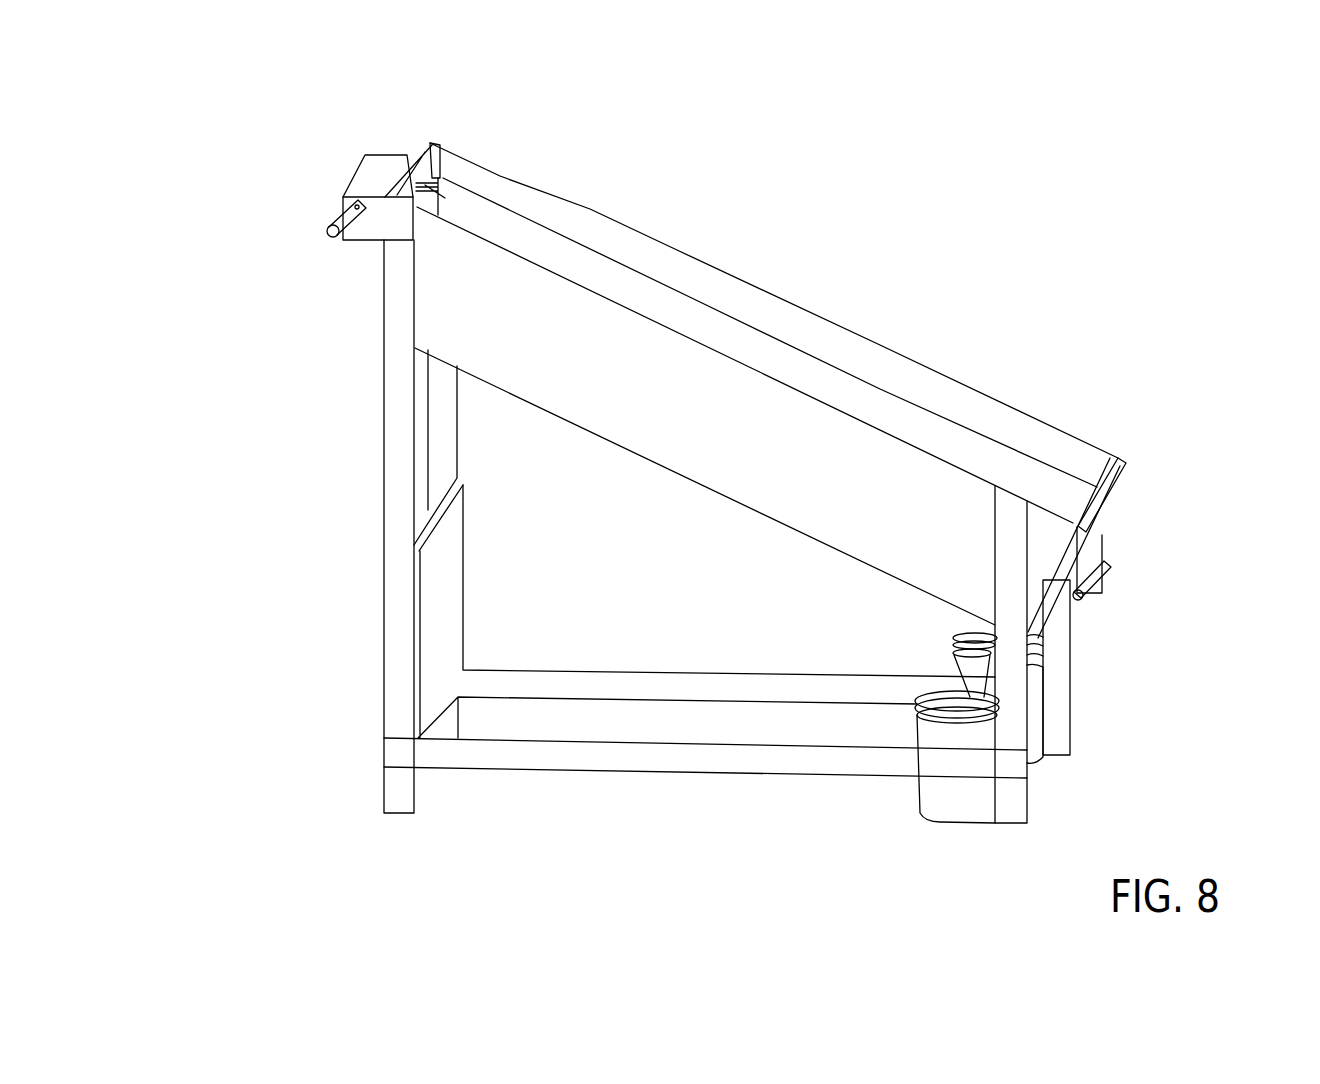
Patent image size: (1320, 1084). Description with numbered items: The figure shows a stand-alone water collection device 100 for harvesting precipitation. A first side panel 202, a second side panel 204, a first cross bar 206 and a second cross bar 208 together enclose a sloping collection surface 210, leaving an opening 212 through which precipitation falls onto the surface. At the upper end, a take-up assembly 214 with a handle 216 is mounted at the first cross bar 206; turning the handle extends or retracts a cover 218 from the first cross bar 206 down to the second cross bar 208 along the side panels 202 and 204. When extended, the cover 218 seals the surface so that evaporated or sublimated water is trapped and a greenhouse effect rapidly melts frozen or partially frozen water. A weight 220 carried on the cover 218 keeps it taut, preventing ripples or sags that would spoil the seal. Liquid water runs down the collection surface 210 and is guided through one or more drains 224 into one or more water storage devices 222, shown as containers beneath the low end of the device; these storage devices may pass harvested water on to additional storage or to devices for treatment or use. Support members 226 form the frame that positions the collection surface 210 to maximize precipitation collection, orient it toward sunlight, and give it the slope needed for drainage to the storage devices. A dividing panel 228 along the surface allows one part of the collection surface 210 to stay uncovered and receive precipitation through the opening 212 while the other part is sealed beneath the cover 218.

The water collection device 100 is at (197, 369).
The first side panel 202 is at (898, 356).
The second side panel 204 is at (496, 313).
The first cross bar 206 is at (413, 153).
The second cross bar 208 is at (1060, 578).
The collection surface 210 is at (619, 446).
The opening 212 is at (600, 231).
The take-up assembly 214 is at (350, 178).
The handle 216 is at (333, 236).
The cover 218 is at (1102, 537).
The weight 220 is at (1105, 574).
The water storage device 222 is at (922, 818).
The drain 224 is at (953, 678).
The support member 226 is at (384, 513).
The dividing panel 228 is at (790, 343).